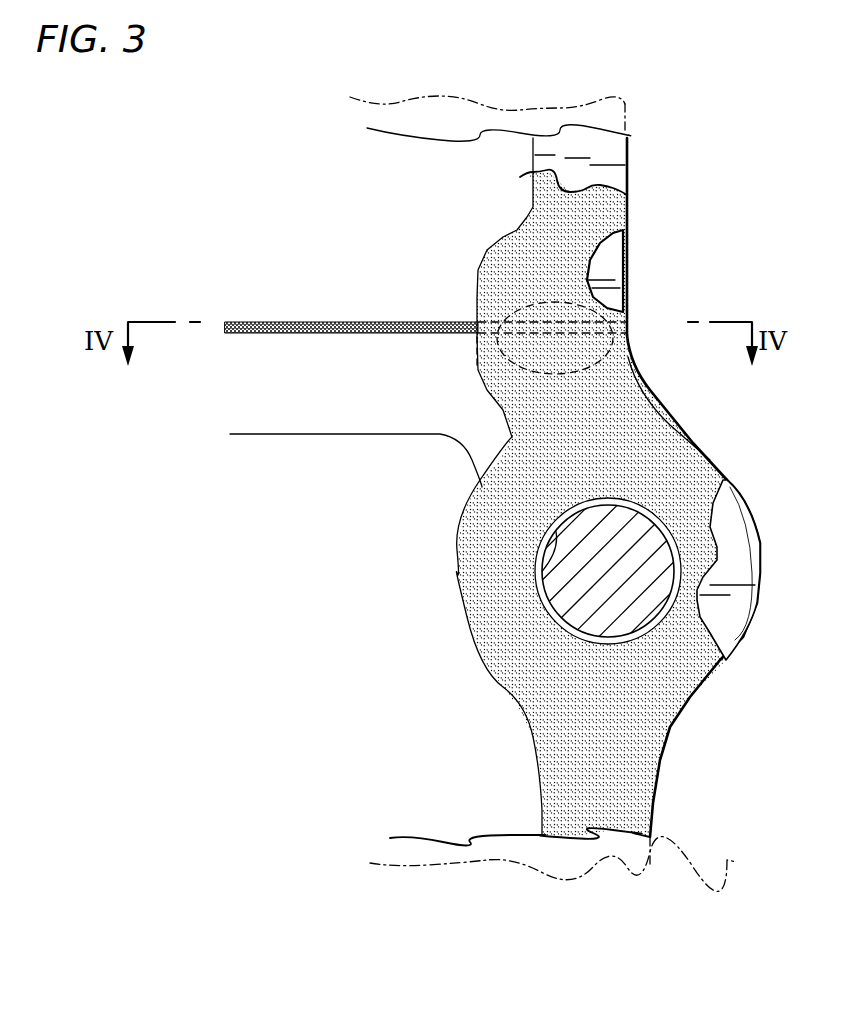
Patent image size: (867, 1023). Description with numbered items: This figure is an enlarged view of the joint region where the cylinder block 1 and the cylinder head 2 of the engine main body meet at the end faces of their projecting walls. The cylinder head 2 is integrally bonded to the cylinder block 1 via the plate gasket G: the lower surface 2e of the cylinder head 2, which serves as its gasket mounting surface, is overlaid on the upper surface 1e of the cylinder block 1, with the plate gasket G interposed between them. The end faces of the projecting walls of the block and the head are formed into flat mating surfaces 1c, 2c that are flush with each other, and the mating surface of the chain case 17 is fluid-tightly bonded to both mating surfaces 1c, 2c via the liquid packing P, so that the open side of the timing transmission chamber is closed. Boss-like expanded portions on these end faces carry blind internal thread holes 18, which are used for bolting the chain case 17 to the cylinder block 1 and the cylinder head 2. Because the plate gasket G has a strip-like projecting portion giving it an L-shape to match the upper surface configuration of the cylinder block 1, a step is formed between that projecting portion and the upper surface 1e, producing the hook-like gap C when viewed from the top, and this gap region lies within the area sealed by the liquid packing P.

The cylinder block 1 is at (683, 733).
The mating surface of cylinder block 1c is at (730, 620).
The upper surface of cylinder block 1e is at (497, 377).
The cylinder head 2 is at (632, 175).
The mating surface of cylinder head 2c is at (617, 262).
The lower surface of cylinder head 2e is at (637, 353).
The chain case 17 is at (566, 864).
The blind internal thread hole 18 is at (537, 577).
The plate gasket G is at (313, 325).
The hook-like gap C is at (502, 310).
The liquid packing P is at (648, 435).